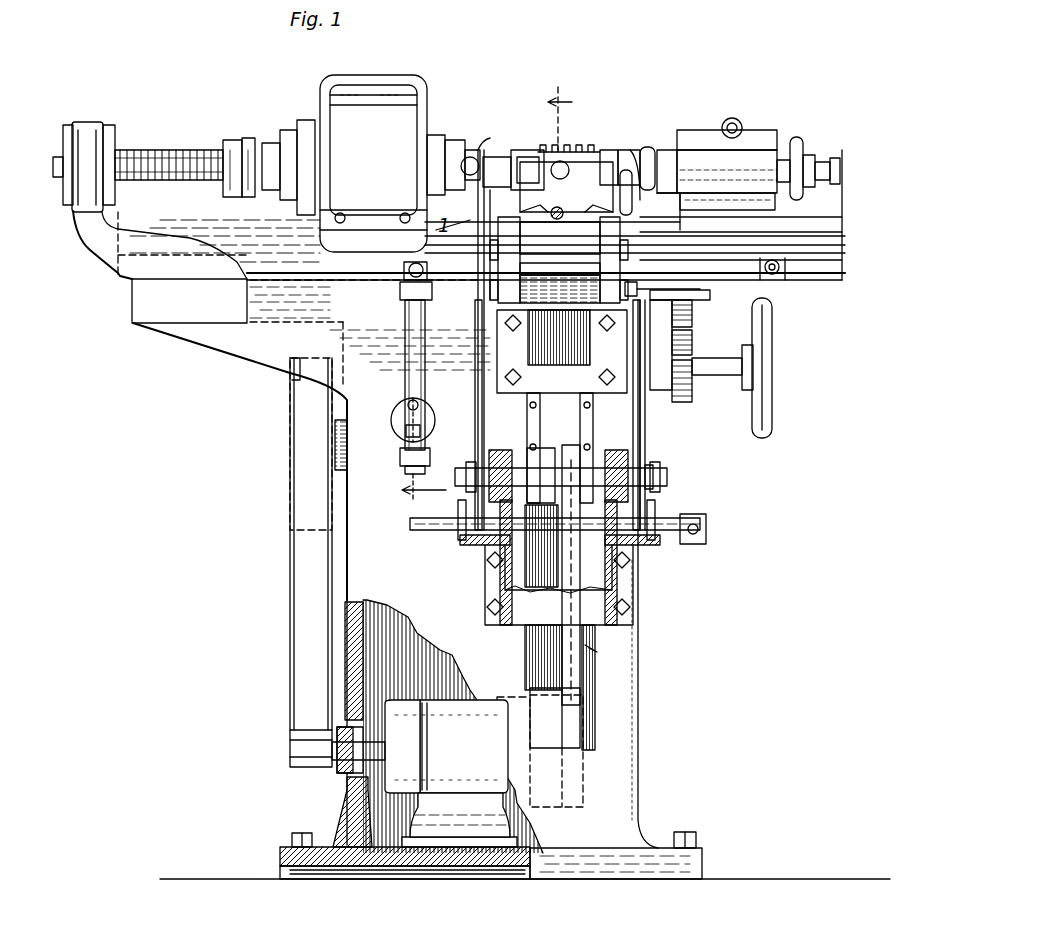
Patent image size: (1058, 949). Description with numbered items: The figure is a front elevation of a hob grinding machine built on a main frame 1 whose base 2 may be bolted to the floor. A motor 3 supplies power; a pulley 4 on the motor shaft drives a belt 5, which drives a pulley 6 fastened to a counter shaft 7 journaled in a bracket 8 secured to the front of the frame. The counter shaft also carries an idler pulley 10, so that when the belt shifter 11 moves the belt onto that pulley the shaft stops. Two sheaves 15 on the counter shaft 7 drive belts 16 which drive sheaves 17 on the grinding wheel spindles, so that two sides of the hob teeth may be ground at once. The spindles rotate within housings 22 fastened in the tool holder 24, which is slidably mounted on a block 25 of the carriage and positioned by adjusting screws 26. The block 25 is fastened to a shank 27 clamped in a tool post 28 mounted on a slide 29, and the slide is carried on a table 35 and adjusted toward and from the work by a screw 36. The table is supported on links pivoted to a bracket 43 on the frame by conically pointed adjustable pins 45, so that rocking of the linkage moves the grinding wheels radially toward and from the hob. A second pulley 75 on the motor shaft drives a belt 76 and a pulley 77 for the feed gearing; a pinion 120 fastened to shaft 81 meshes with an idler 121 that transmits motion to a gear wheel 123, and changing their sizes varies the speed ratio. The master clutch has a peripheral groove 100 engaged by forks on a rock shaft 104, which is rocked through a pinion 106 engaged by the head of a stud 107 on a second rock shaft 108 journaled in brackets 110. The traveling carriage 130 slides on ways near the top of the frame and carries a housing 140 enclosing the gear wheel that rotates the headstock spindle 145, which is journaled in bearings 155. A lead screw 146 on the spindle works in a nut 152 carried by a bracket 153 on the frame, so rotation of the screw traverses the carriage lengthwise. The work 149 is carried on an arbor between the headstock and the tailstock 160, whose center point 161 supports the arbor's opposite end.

The main frame 1 is at (625, 740).
The base 2 is at (694, 856).
The motor 3 is at (460, 700).
The pulley 4 is at (548, 770).
The belt 5 is at (565, 720).
The pulley 6 is at (605, 652).
The counter shaft 7 is at (655, 470).
The bracket 8 is at (492, 578).
The idler pulley 10 is at (540, 462).
The belt shifter 11 is at (425, 534).
The sheaves 15 is at (475, 436).
The belts 16 is at (478, 300).
The sheaves 17 is at (472, 160).
The housings 22 is at (490, 168).
The tool holder 24 is at (532, 130).
The block 25 is at (608, 172).
The adjusting screws 26 is at (483, 190).
The shank 27 is at (560, 175).
The tool post 28 is at (583, 155).
The slide 29 is at (602, 160).
The table 35 is at (553, 232).
The screw 36 is at (560, 218).
The bracket 43 is at (555, 335).
The pins 45 is at (470, 250).
The pulley 75 is at (290, 745).
The belt 76 is at (300, 585).
The pulley 77 is at (292, 506).
The shaft 81 is at (708, 362).
The peripheral groove 100 is at (408, 330).
The rock shaft 104 is at (400, 420).
The pinion 106 is at (405, 434).
The stud 107 is at (408, 404).
The second rock shaft 108 is at (408, 272).
The brackets 110 is at (405, 290).
The pinion 120 is at (688, 392).
The idler 121 is at (682, 336).
The gear wheel 123 is at (700, 289).
The traveling carriage 130 is at (173, 198).
The housing 140 is at (340, 100).
The headstock spindle 145 is at (288, 140).
The lead screw 146 is at (142, 150).
The work 149 is at (543, 140).
The nut 152 is at (90, 128).
The bracket 153 is at (110, 252).
The bearings 155 is at (432, 140).
The tailstock 160 is at (742, 150).
The center point 161 is at (688, 140).